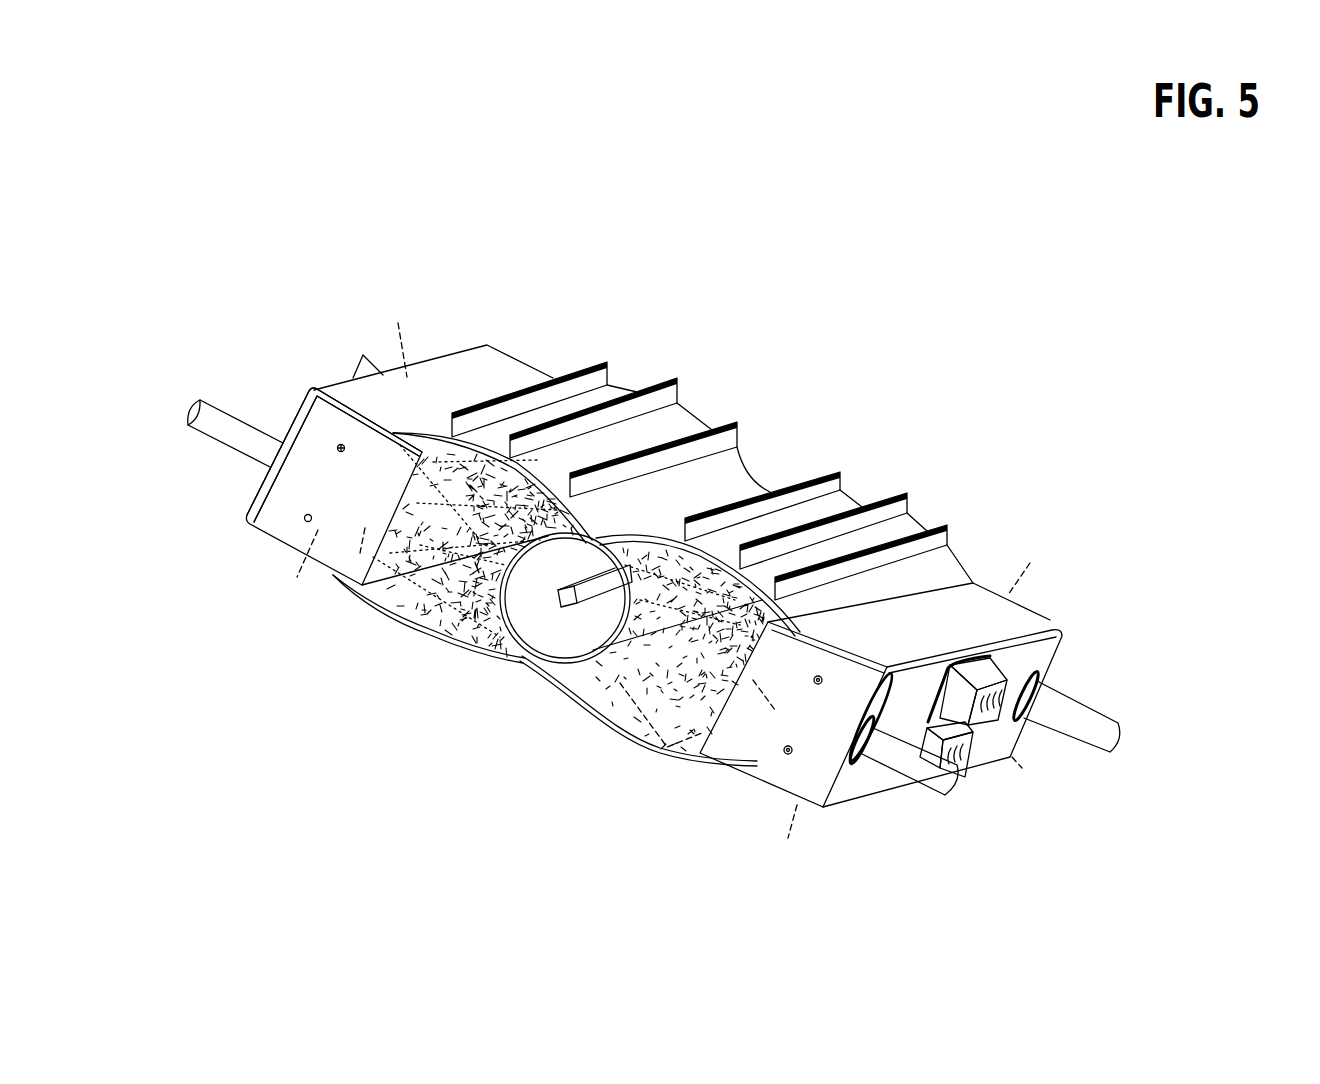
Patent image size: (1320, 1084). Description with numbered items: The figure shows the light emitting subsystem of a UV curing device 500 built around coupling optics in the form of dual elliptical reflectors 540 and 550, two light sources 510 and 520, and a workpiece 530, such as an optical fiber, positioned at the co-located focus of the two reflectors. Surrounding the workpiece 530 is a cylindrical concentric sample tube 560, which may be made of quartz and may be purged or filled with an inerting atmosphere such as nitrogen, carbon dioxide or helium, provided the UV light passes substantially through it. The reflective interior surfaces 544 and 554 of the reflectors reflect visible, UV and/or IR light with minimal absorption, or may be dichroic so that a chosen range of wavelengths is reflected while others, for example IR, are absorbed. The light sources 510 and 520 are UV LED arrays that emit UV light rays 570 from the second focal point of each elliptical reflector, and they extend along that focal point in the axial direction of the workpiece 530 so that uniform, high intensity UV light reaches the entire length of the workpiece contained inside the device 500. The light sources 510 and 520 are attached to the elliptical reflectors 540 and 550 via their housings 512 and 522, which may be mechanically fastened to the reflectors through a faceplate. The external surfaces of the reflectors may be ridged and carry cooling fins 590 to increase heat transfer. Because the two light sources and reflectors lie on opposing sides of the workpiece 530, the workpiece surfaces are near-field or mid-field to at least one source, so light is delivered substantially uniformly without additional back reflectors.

The UV curing device 500 is at (1022, 272).
The light source 510 is at (291, 530).
The housing 512 is at (313, 390).
The light source 520 is at (762, 770).
The housing 522 is at (1045, 617).
The workpiece 530 is at (560, 628).
The elliptical reflector 540 is at (402, 637).
The reflective interior surface 544 is at (375, 596).
The elliptical reflector 550 is at (655, 757).
The reflective interior surface 554 is at (615, 717).
The sample tube 560 is at (517, 657).
The UV light rays 570 is at (458, 627).
The cooling fins 590 is at (897, 493).